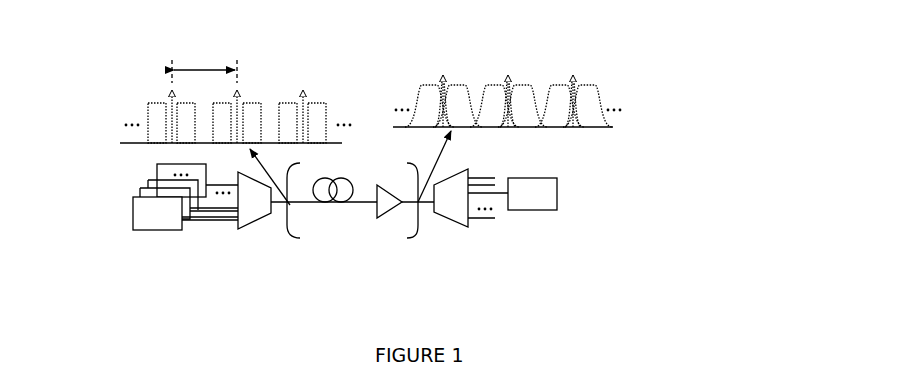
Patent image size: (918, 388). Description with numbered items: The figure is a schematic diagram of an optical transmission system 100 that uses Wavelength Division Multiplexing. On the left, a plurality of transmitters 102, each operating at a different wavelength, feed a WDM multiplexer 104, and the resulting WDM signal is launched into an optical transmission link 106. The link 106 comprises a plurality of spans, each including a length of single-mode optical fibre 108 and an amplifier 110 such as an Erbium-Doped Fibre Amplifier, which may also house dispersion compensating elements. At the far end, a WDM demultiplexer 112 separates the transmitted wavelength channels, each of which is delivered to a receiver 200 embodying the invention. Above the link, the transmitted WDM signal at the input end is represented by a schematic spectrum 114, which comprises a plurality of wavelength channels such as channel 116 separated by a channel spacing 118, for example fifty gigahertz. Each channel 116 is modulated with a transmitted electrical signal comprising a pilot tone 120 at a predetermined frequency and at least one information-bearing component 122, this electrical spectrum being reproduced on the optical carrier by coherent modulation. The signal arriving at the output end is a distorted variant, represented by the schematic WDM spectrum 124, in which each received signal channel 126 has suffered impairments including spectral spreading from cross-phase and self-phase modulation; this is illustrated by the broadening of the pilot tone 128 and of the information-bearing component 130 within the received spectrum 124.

The optical transmission system 100 is at (731, 77).
The transmitters 102 is at (126, 244).
The WDM multiplexer 104 is at (252, 217).
The optical transmission link 106 is at (309, 254).
The single-mode optical fibre 108 is at (355, 182).
The amplifier 110 is at (375, 207).
The WDM demultiplexer 112 is at (463, 218).
The schematic spectrum 114 is at (101, 102).
The wavelength channel 116 is at (272, 58).
The channel spacing 118 is at (210, 66).
The pilot tone 120 is at (315, 82).
The information-bearing component 122 is at (318, 118).
The schematic WDM spectrum 124 is at (657, 119).
The received signal channel 126 is at (554, 58).
The pilot tone 128 is at (584, 69).
The information-bearing component 130 is at (597, 102).
The receiver 200 is at (565, 193).